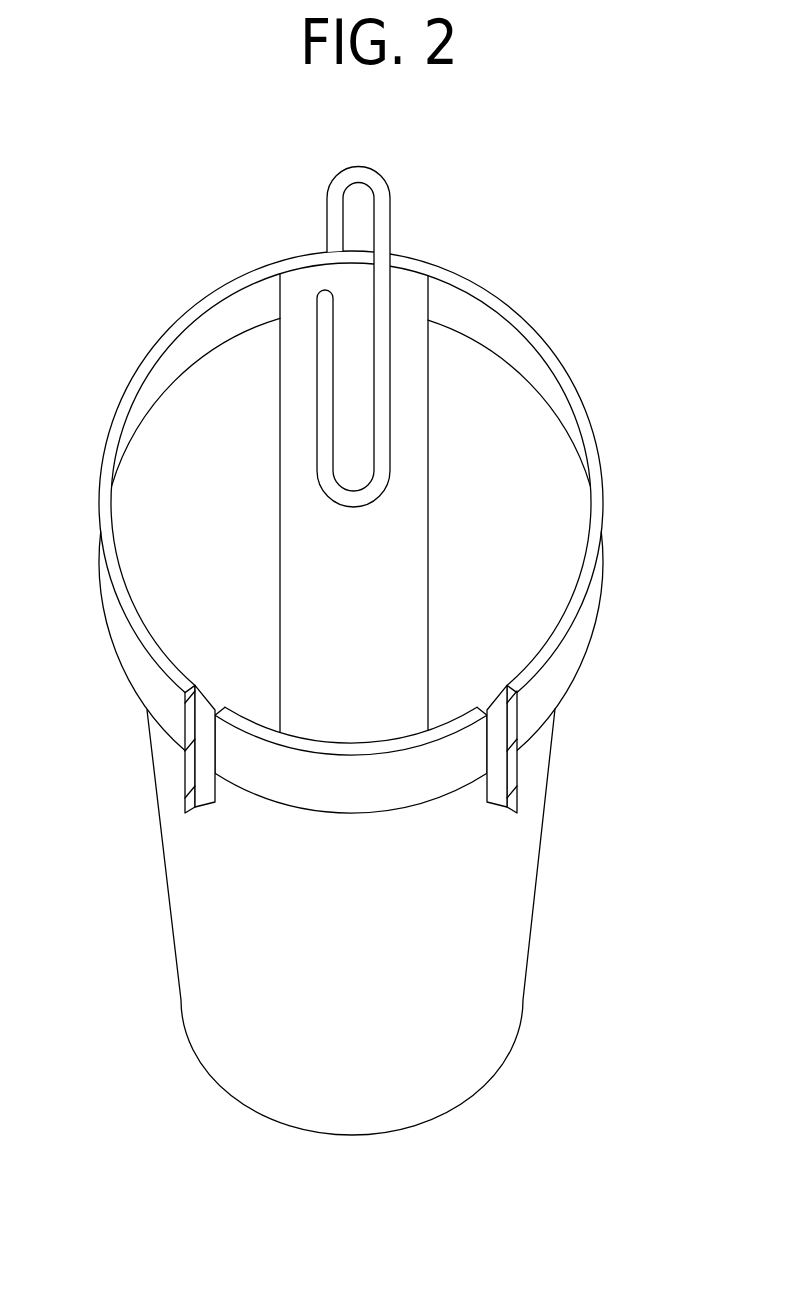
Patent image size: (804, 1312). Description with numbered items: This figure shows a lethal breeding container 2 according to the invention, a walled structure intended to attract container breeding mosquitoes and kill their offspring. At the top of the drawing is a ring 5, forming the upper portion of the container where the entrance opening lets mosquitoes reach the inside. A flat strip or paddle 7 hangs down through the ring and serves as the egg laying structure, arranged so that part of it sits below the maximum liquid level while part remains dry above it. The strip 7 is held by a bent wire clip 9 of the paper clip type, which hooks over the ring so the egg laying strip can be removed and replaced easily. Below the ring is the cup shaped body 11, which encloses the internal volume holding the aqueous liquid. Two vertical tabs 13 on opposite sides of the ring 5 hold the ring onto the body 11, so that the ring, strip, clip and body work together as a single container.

The lethal breeding container 2 is at (512, 556).
The ring 5 is at (555, 505).
The plate 7 is at (415, 340).
The hook 9 is at (392, 233).
The body 11 is at (490, 948).
The tabs 13 is at (203, 736).